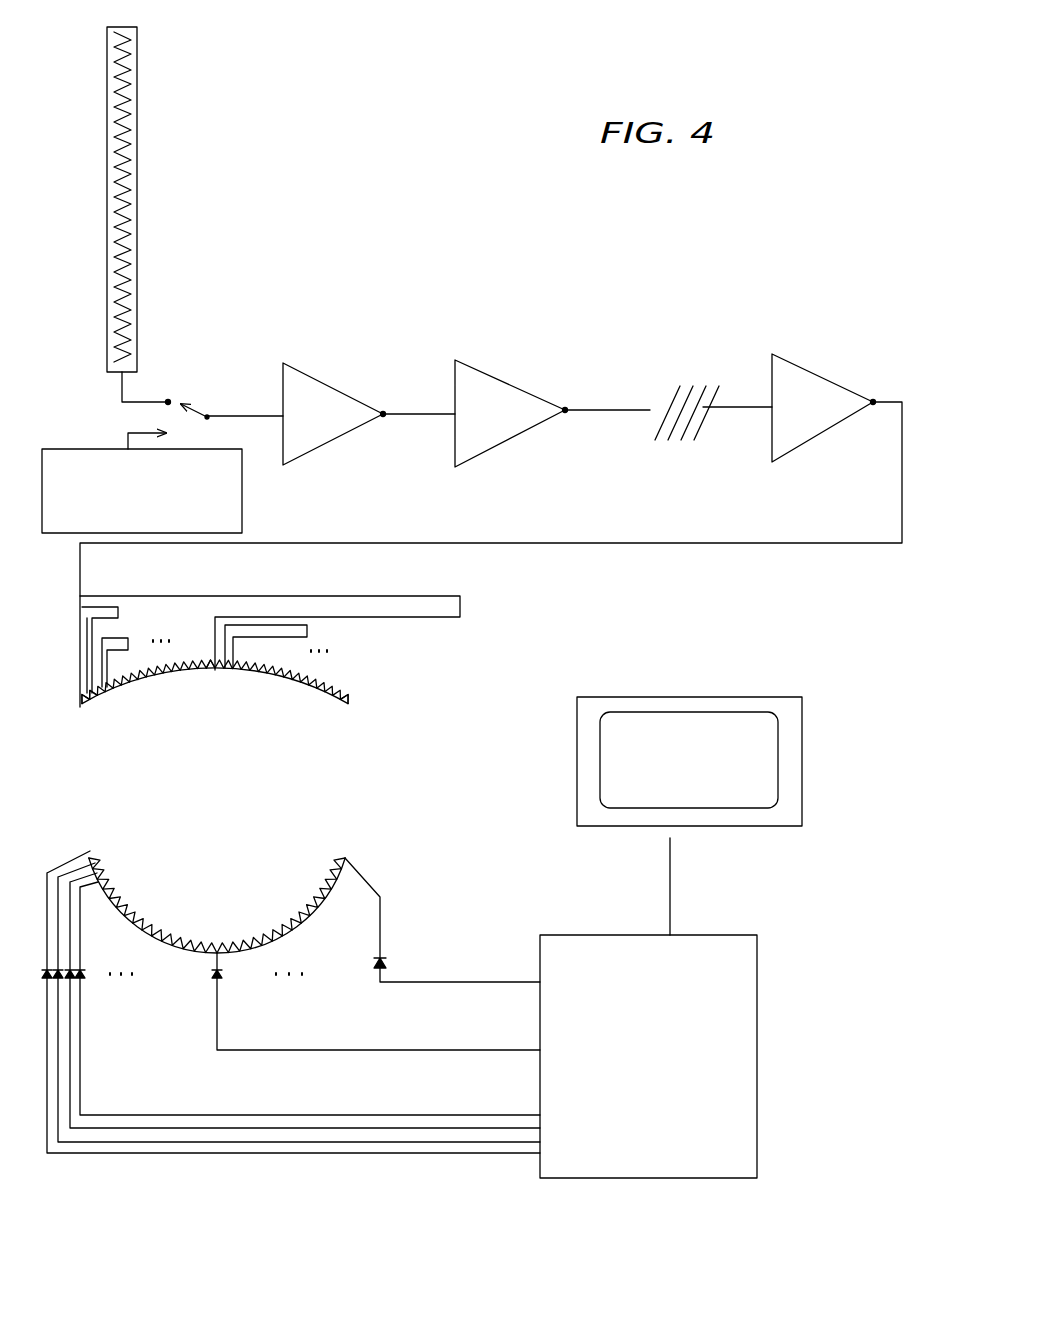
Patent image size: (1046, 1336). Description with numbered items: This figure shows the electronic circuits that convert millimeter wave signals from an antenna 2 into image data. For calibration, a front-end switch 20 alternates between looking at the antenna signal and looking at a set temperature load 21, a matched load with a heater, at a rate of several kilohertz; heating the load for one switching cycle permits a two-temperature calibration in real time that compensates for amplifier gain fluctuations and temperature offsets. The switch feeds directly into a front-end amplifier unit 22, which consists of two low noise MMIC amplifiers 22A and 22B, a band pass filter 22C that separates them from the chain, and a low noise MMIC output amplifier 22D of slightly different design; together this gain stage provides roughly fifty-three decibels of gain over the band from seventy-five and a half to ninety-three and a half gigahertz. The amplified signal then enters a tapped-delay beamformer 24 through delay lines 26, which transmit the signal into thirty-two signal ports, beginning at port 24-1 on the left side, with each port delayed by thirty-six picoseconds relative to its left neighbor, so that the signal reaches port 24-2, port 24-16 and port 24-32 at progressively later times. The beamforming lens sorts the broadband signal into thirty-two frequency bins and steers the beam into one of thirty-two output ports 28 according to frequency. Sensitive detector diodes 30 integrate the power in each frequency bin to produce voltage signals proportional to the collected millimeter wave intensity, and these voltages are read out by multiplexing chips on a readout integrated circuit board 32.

The antenna 2 is at (152, 105).
The front-end switch 20 is at (197, 383).
The set temperature load 21 is at (60, 534).
The front-end amplifier unit 22 is at (491, 484).
The low noise MMIC amplifier 22A is at (326, 382).
The low noise MMIC amplifier 22B is at (509, 380).
The band pass filter 22C is at (673, 378).
The low noise MMIC output amplifier 22D is at (801, 362).
The beamformer 24 is at (407, 731).
The port 24-1 is at (83, 710).
The port 24-2 is at (96, 711).
The port 24-16 is at (207, 675).
The port 24-32 is at (346, 700).
The delay lines 26 is at (477, 644).
The output ports 28 is at (373, 867).
The detector diodes 30 is at (394, 956).
The readout integrated circuit board 32 is at (587, 934).